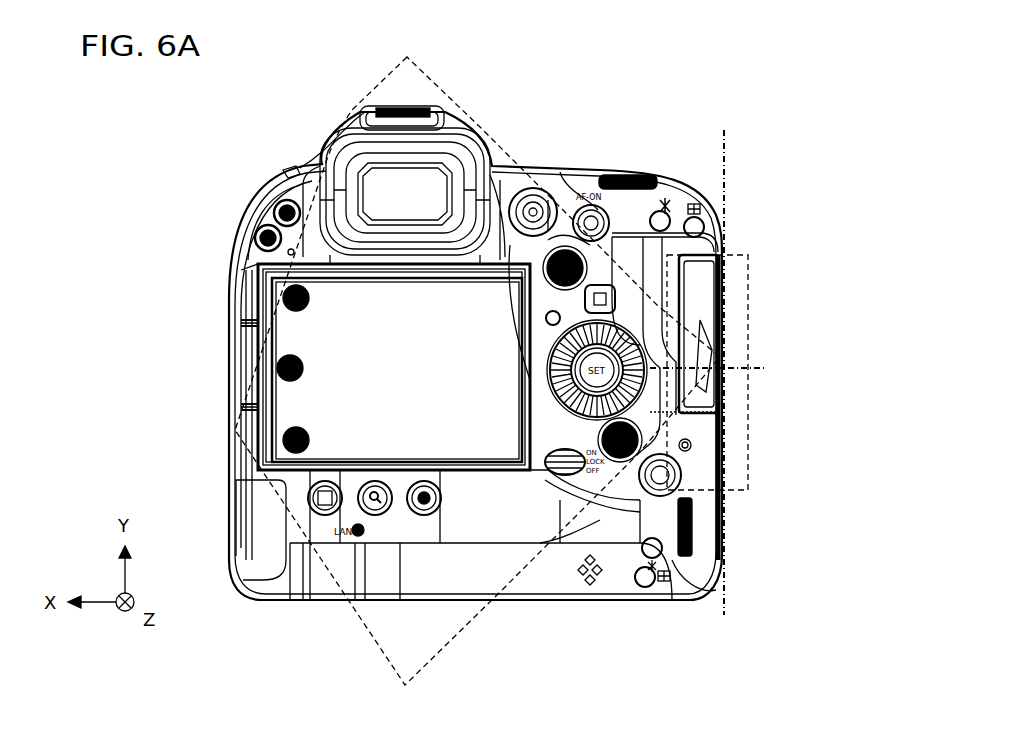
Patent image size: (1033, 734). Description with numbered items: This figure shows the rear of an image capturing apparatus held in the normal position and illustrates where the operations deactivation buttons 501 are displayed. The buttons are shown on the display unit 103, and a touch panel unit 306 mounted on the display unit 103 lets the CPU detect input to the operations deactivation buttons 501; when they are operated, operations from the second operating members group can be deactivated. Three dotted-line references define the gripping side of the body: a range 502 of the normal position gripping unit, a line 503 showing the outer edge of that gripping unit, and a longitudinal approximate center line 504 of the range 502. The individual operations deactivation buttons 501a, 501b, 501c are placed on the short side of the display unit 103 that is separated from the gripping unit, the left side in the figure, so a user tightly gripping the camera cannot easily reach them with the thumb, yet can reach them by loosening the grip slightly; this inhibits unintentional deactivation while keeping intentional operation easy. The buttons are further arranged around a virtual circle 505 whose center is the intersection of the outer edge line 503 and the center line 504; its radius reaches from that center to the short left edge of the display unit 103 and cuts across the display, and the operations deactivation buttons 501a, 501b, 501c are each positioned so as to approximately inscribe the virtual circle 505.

The display unit 103 is at (473, 300).
The touch panel unit 306 is at (397, 370).
The operations deactivation buttons 501 is at (190, 369).
The operations deactivation button 501a is at (282, 298).
The operations deactivation button 501b is at (277, 368).
The operations deactivation button 501c is at (224, 439).
The range of the normal position gripping unit 502 is at (735, 255).
The line showing the outer edge of the normal position gripping unit 503 is at (725, 173).
The longitudinal approximate center line 504 is at (740, 360).
The virtual circle 505 is at (448, 106).